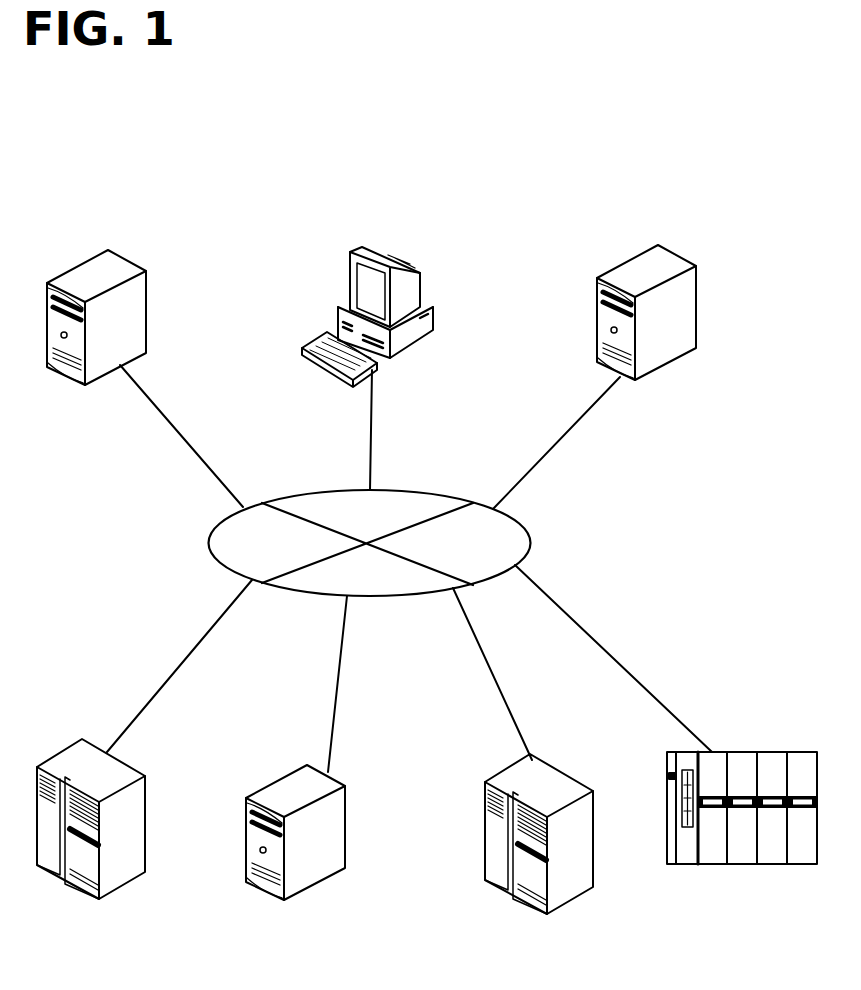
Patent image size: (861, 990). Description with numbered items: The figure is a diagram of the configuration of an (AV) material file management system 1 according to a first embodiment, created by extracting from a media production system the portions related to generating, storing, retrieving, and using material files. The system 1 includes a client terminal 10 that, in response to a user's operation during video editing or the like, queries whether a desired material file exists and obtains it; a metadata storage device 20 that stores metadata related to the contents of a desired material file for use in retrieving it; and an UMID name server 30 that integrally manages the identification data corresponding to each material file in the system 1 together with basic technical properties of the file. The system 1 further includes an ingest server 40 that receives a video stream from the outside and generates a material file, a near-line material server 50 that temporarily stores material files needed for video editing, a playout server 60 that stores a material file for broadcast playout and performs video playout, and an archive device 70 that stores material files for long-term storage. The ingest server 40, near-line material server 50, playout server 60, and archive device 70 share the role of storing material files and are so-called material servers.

The (AV) material file management system 1 is at (268, 152).
The client terminal 10 is at (378, 250).
The metadata storage device 20 is at (96, 250).
The UMID name server 30 is at (669, 248).
The ingest server 40 is at (88, 897).
The near-line material server 50 is at (302, 892).
The playout server 60 is at (570, 903).
The archive device 70 is at (737, 865).